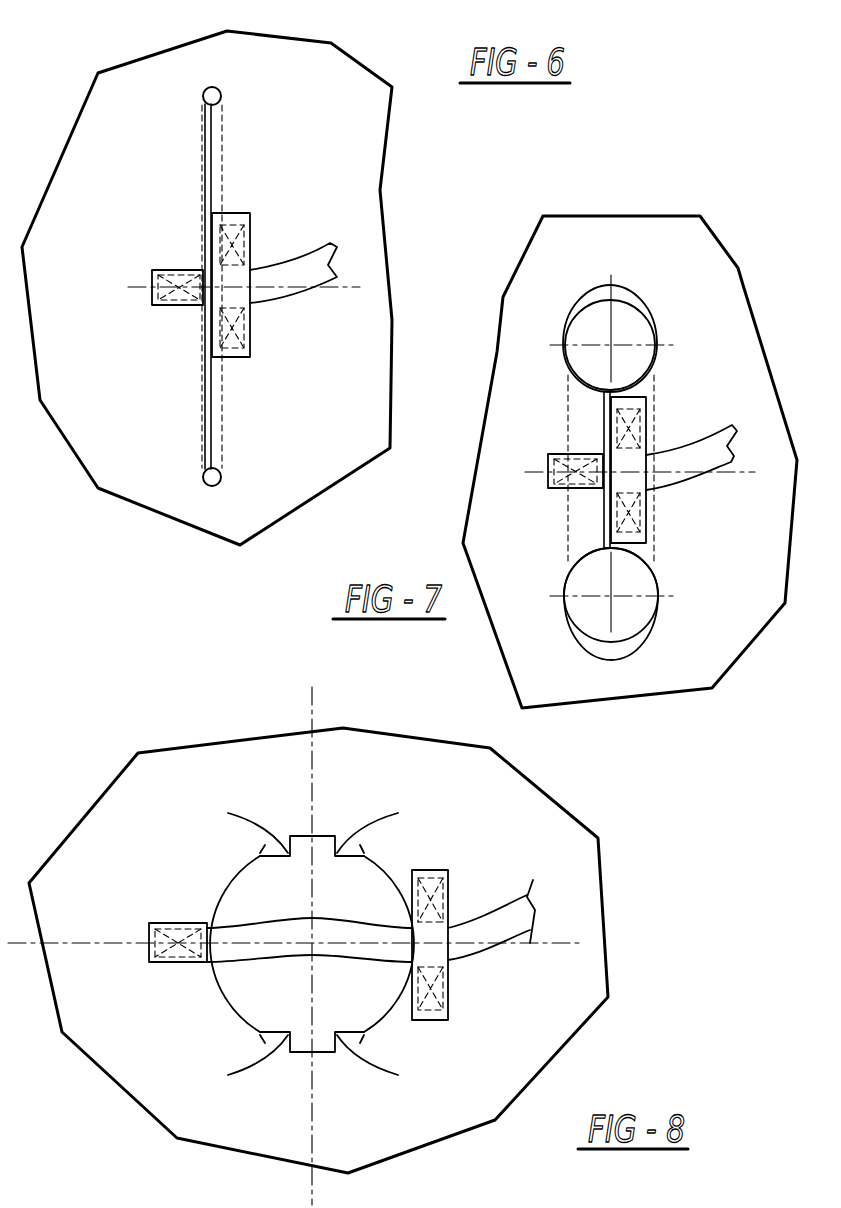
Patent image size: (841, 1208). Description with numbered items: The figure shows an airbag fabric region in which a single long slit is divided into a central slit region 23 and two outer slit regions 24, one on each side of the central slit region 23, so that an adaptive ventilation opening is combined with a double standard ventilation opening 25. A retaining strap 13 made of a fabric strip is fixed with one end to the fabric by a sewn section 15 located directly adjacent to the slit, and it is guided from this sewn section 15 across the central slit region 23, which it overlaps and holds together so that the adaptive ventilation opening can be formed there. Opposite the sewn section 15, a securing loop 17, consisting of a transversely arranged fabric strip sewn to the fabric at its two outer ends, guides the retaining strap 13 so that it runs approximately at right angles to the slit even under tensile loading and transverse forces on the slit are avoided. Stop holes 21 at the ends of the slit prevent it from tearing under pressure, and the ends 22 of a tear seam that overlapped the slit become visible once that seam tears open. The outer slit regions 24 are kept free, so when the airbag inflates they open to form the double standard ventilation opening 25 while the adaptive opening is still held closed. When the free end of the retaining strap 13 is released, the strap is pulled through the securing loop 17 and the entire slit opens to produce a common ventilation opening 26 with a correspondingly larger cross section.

In FIG. 6, the retaining strap 13 is at (312, 263).
In FIG. 7, the retaining strap 13 is at (710, 450).
In FIG. 8, the retaining strap 13 is at (508, 917).
In FIG. 6, the sewn section 15 is at (152, 303).
In FIG. 7, the sewn section 15 is at (575, 471).
In FIG. 8, the sewn section 15 is at (163, 965).
In FIG. 6, the securing loop 17 is at (250, 330).
In FIG. 8, the securing loop 17 is at (448, 995).
In FIG. 6, the stop holes 21 is at (210, 88).
In FIG. 8, the stop holes 21 is at (308, 835).
In FIG. 8, the ends of the tear seam 22 is at (373, 817).
In FIG. 7, the central slit region 23 is at (647, 408).
In FIG. 6, the slit regions 24 is at (204, 183).
In FIG. 7, the standard ventilation opening 25 is at (622, 325).
In FIG. 8, the common ventilation opening 26 is at (370, 898).